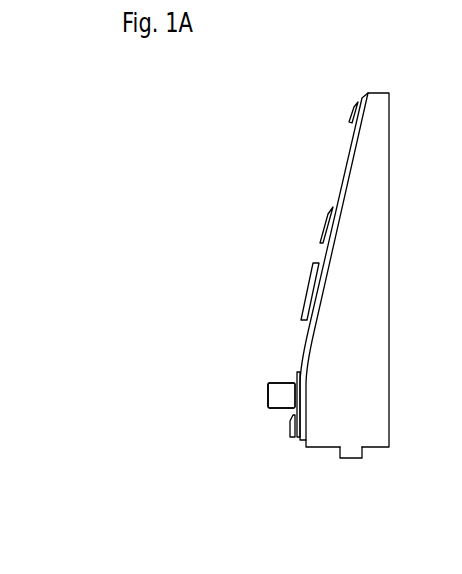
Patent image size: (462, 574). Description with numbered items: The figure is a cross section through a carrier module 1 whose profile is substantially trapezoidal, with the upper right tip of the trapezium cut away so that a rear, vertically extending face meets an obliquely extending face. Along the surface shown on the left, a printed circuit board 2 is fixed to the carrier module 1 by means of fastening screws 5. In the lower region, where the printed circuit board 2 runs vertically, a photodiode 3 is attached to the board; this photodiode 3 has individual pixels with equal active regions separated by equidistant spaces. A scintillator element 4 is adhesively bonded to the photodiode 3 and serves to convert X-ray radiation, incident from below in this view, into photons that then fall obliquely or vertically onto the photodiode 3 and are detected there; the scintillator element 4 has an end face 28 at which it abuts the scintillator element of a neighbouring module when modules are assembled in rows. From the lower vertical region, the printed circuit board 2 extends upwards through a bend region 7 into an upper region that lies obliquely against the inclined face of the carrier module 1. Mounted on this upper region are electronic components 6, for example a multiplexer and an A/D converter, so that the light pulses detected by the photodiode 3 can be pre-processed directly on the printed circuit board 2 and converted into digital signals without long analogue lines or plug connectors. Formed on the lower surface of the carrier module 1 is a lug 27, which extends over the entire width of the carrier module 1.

The carrier module 1 is at (375, 233).
The printed circuit board 2 is at (347, 170).
The photodiode 3 is at (294, 381).
The scintillator element 4 is at (268, 397).
The fastening screws 5 is at (355, 112).
The electronic components 6 is at (307, 297).
The bend region 7 is at (300, 353).
The lug 27 is at (352, 450).
The end face 28 is at (283, 397).